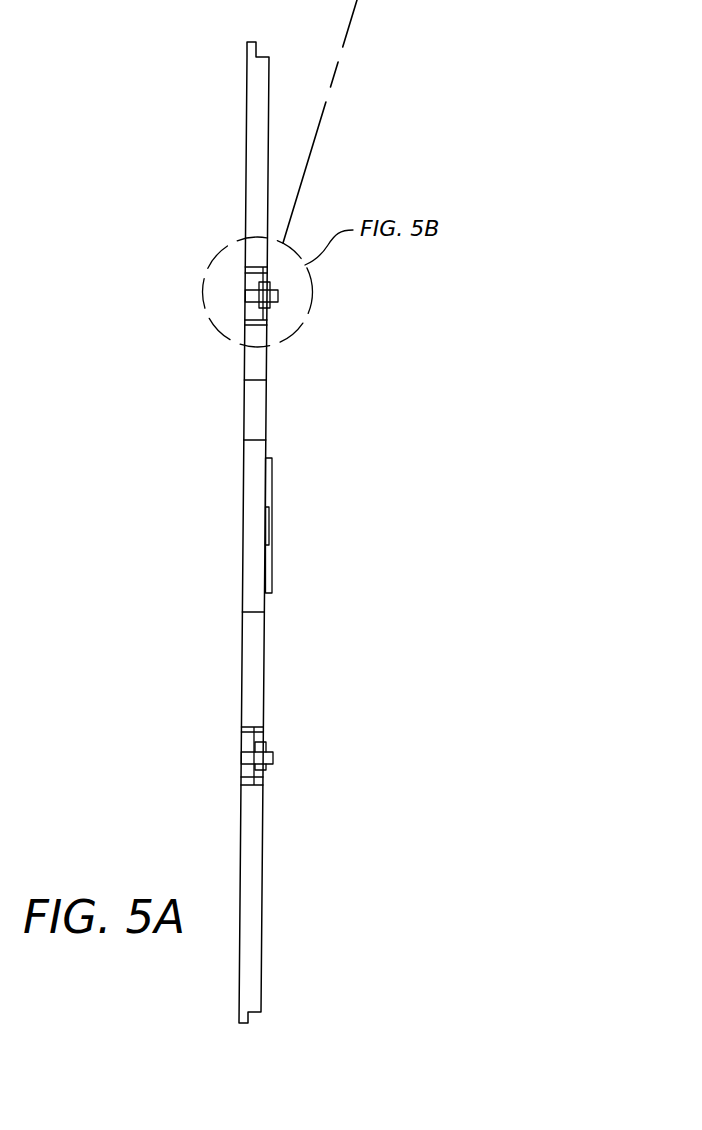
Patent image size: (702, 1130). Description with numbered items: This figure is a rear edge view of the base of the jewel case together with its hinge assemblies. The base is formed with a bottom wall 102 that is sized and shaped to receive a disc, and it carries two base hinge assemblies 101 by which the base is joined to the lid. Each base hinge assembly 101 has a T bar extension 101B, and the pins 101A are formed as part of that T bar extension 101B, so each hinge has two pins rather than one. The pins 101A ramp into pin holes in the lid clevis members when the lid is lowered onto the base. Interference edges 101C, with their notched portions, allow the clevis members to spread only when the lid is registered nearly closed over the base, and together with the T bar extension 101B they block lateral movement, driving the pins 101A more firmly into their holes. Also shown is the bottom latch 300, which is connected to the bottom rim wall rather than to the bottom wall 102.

The bottom wall 102 is at (246, 127).
The bottom latch 300 is at (267, 478).
The base hinge assembly 101 is at (369, 764).
The pins 101A is at (268, 748).
The T bar extension 101B is at (273, 757).
The interference edges 101C is at (263, 732).